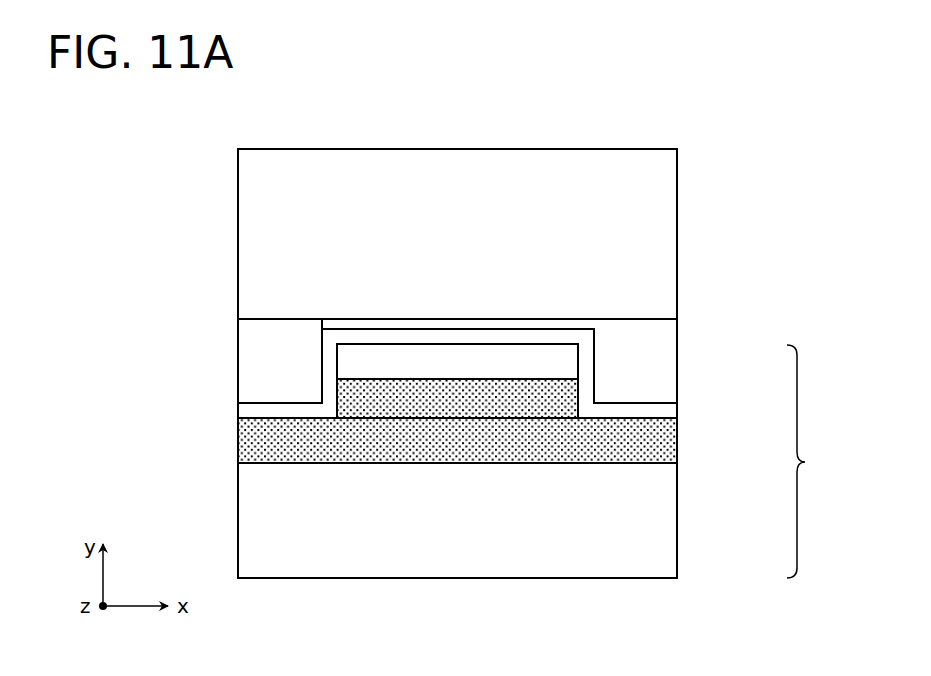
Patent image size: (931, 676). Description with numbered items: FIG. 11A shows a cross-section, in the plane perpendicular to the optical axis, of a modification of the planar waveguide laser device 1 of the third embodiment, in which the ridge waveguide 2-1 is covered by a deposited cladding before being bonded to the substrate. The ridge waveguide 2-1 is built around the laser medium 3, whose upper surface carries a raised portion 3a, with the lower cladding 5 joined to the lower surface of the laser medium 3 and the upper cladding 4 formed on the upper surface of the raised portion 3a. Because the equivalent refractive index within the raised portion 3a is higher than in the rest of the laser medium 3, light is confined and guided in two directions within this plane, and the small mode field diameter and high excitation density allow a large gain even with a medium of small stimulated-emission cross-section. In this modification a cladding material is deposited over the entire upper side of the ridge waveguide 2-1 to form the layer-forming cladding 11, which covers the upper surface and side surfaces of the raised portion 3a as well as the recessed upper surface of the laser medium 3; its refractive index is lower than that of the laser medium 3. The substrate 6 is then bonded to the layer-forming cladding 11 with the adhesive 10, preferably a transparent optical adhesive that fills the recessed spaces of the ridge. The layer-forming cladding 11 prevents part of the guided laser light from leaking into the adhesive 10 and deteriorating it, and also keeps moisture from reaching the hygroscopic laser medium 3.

The planar waveguide laser device 1 is at (708, 145).
The substrate 6 is at (648, 223).
The layer-forming cladding 11 is at (665, 410).
The upper cladding 4 is at (553, 362).
The adhesive 10 is at (255, 386).
The raised portion 3a is at (373, 388).
The laser medium 3 is at (647, 448).
The lower cladding 5 is at (645, 530).
The ridge waveguide 2-1 is at (820, 461).